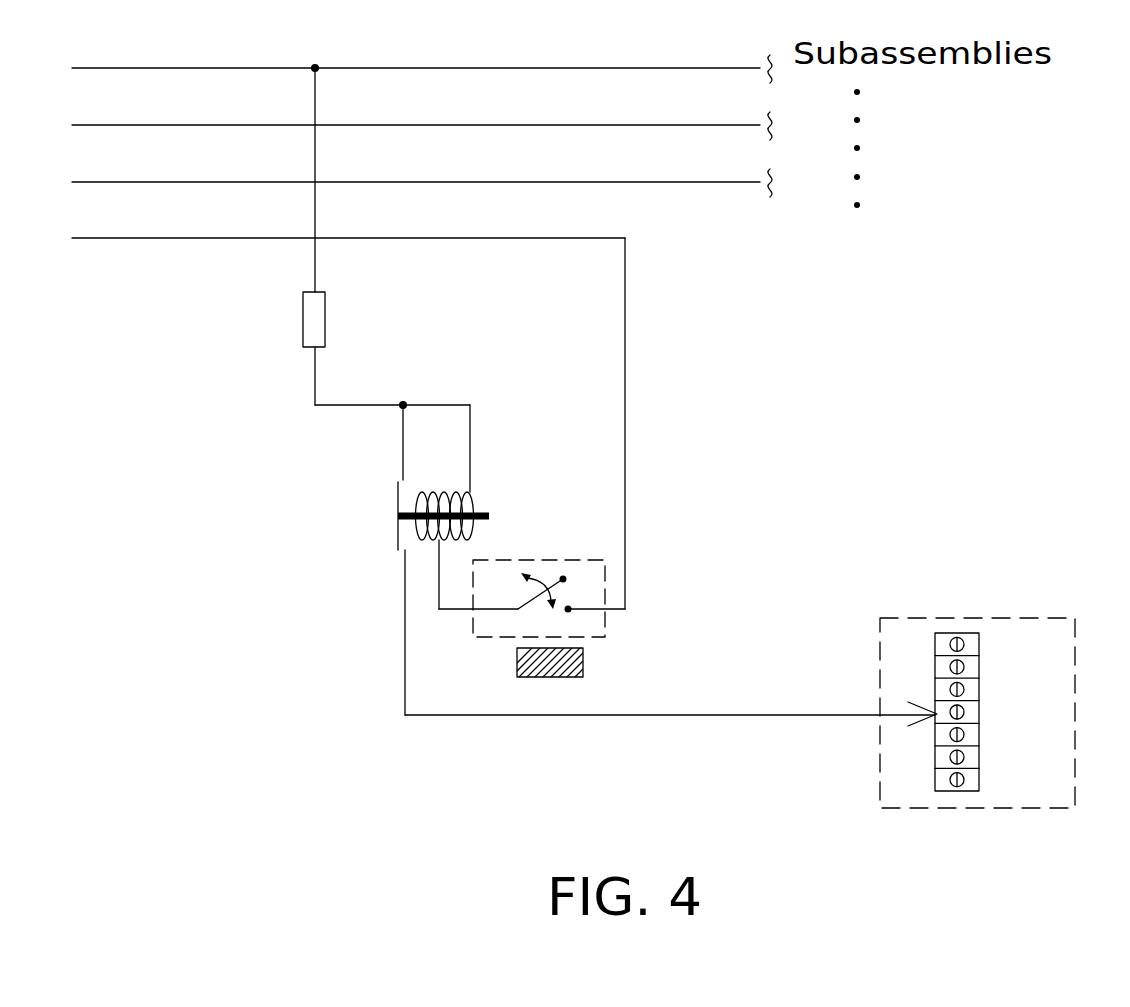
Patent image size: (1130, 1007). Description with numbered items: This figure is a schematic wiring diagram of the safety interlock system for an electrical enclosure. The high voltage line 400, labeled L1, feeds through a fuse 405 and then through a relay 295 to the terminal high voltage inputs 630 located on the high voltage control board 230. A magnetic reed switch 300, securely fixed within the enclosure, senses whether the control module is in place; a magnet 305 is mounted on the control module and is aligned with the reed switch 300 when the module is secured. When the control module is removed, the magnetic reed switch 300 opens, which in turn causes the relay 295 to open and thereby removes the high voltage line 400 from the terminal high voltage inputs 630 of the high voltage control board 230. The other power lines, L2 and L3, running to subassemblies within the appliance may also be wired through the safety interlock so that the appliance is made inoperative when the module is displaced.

The high voltage line 400 is at (418, 134).
The fuse 405 is at (298, 338).
The relay 295 is at (376, 532).
The magnetic reed switch 300 is at (542, 549).
The magnet 305 is at (591, 683).
The high voltage control board 230 is at (977, 665).
The terminal high voltage inputs 630 is at (982, 722).